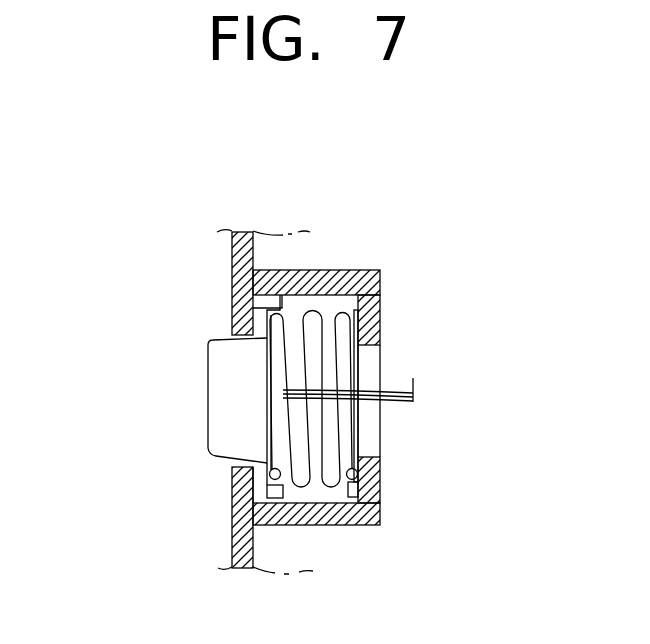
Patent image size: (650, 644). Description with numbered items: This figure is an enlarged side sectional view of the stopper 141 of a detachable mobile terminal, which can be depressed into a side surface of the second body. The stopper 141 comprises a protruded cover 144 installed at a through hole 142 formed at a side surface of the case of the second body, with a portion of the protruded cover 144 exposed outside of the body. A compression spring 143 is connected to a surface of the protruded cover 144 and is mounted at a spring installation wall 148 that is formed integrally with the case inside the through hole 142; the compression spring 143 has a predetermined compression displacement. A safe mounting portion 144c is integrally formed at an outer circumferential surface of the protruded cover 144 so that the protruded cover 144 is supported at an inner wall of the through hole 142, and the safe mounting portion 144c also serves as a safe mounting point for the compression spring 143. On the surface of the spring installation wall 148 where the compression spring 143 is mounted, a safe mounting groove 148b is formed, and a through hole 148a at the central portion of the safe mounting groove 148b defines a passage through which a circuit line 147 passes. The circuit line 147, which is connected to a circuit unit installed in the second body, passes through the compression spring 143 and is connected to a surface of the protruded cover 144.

The stopper 141 is at (190, 362).
The through hole 142 is at (228, 338).
The compression spring 143 is at (335, 372).
The protruded cover 144 is at (225, 340).
The safe mounting portion 144c is at (273, 303).
The circuit line 147 is at (407, 403).
The spring installation wall 148 is at (380, 349).
The through hole 148a is at (358, 343).
The safe mounting groove 148b is at (373, 300).